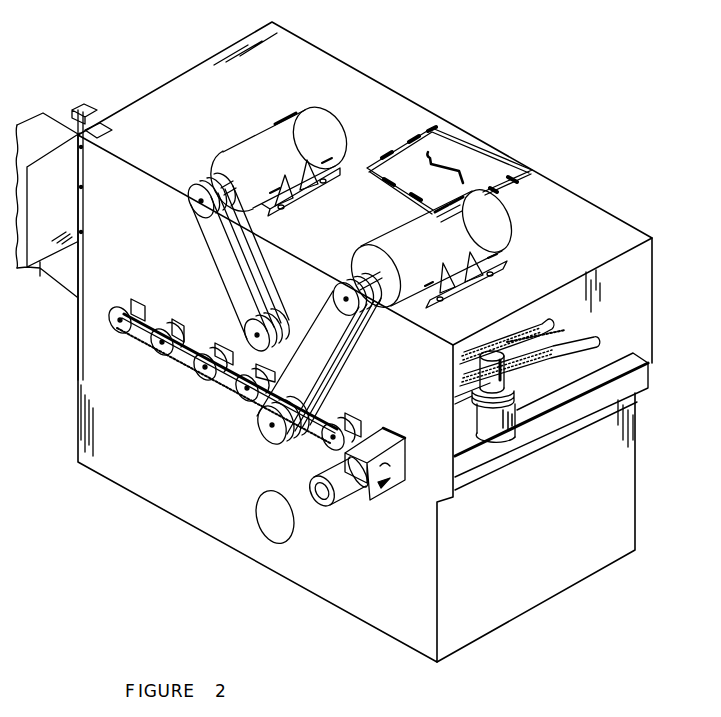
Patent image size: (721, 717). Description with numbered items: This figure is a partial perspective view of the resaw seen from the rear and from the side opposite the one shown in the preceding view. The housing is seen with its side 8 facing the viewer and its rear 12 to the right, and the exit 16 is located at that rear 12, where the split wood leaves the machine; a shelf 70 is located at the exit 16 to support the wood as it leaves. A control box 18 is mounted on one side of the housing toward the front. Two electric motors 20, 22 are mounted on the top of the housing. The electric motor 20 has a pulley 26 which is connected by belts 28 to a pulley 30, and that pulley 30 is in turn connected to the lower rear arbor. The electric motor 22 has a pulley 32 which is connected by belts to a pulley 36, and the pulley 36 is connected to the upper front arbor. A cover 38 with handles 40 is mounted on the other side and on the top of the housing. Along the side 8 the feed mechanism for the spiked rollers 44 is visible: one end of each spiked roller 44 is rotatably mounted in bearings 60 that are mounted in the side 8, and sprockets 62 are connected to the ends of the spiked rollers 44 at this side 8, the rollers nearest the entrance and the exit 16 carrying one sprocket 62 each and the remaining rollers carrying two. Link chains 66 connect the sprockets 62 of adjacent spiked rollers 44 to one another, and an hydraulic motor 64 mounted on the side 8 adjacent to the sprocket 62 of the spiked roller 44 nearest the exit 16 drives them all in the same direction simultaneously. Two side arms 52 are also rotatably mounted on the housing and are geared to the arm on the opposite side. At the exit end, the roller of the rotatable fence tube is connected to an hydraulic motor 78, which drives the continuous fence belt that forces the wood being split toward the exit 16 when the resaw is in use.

The side 8 is at (148, 470).
The rear 12 is at (560, 583).
The exit 16 is at (637, 329).
The control box 18 is at (37, 122).
The electric motor 20 is at (498, 229).
The electric motor 22 is at (287, 130).
The pulley 26 is at (341, 283).
The belts 28 is at (344, 366).
The pulley 30 is at (270, 431).
The pulley 32 is at (197, 188).
The pulley 36 is at (250, 332).
The cover 38 is at (466, 142).
The handles 40 is at (432, 151).
The spiked rollers 44 is at (553, 369).
The side arms 52 is at (566, 331).
The bearings 60 is at (136, 298).
The sprockets 62 is at (114, 331).
The hydraulic motor 64 is at (353, 494).
The link chains 66 is at (193, 335).
The shelf 70 is at (587, 397).
The hydraulic motor 78 is at (483, 372).